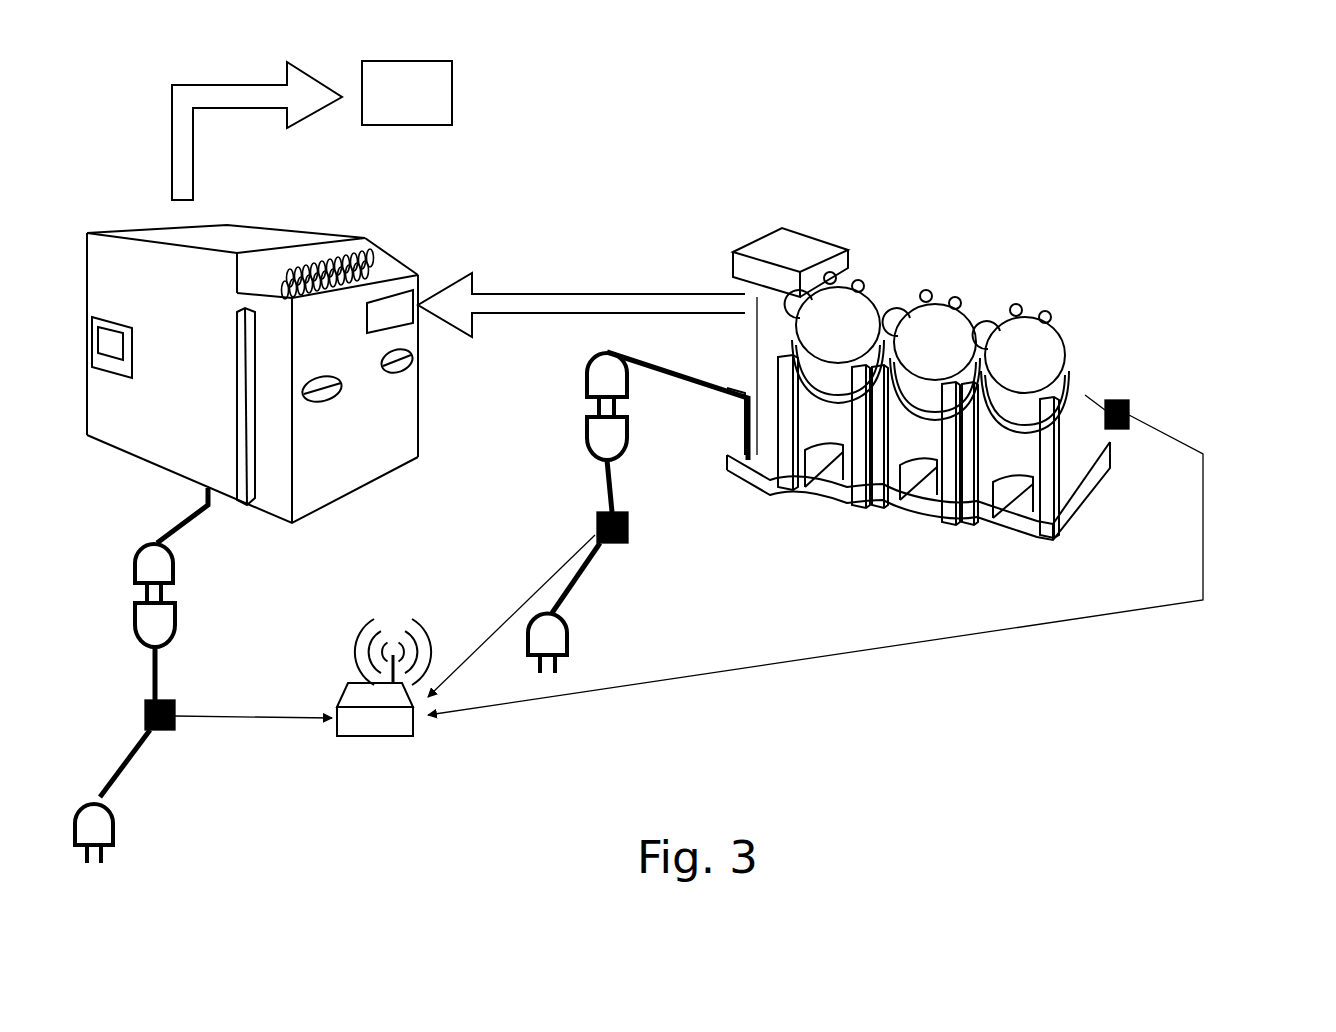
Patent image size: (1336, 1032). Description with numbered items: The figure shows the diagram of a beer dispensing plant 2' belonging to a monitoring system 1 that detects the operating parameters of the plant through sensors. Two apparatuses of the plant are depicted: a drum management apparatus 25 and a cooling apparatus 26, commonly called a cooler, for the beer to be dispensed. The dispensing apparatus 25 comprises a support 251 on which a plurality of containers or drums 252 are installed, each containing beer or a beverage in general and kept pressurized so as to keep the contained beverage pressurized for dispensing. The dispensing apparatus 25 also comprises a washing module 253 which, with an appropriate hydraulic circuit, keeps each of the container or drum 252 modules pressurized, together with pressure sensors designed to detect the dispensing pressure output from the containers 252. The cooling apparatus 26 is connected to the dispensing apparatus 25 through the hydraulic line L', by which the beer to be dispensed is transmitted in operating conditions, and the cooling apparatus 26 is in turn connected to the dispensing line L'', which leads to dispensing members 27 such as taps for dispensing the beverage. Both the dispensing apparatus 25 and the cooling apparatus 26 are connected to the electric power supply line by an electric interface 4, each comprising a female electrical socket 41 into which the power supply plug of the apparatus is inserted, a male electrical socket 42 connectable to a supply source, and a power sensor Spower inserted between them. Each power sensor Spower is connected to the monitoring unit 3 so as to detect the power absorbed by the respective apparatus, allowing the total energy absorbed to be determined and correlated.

The monitoring system 1 is at (1240, 262).
The beer dispensing plant 2' is at (617, 190).
The monitoring unit 3 is at (360, 728).
The electric interface 4 is at (411, 622).
The drum management apparatus 25 is at (991, 387).
The cooling apparatus 26 is at (257, 240).
The dispensing members 27 is at (423, 109).
The female electrical socket 41 is at (155, 618).
The male electrical socket 42 is at (97, 825).
The support 251 is at (883, 490).
The containers or drums 252 is at (837, 312).
The washing module 253 is at (787, 250).
The hydraulic line L' is at (581, 337).
The dispensing line L'' is at (257, 131).
The power sensor Spower is at (165, 730).